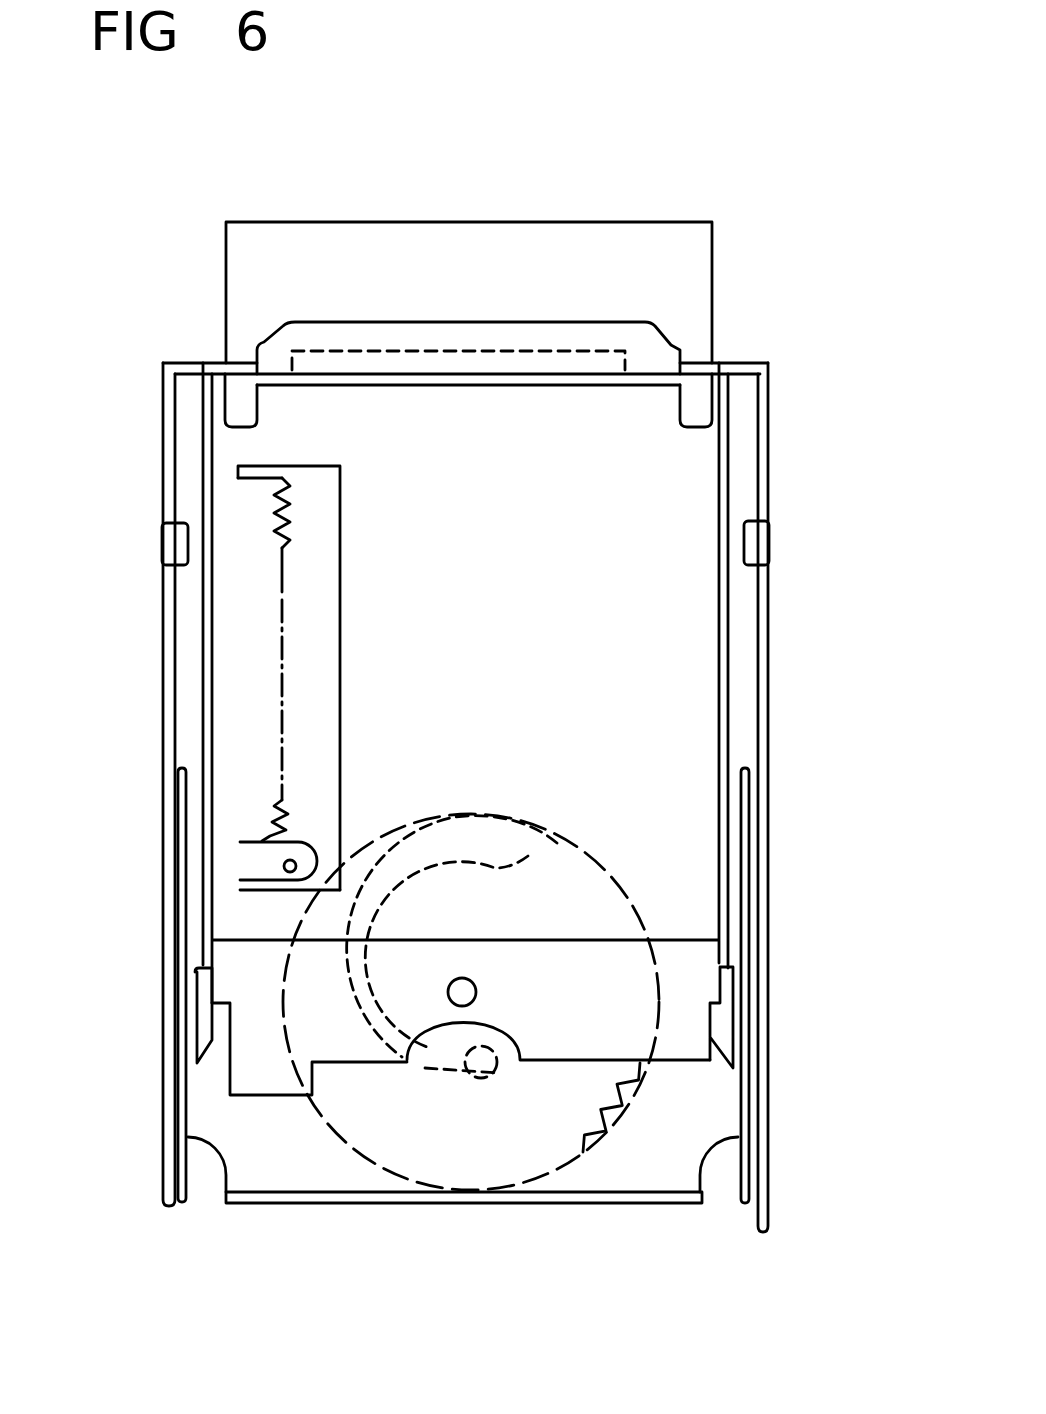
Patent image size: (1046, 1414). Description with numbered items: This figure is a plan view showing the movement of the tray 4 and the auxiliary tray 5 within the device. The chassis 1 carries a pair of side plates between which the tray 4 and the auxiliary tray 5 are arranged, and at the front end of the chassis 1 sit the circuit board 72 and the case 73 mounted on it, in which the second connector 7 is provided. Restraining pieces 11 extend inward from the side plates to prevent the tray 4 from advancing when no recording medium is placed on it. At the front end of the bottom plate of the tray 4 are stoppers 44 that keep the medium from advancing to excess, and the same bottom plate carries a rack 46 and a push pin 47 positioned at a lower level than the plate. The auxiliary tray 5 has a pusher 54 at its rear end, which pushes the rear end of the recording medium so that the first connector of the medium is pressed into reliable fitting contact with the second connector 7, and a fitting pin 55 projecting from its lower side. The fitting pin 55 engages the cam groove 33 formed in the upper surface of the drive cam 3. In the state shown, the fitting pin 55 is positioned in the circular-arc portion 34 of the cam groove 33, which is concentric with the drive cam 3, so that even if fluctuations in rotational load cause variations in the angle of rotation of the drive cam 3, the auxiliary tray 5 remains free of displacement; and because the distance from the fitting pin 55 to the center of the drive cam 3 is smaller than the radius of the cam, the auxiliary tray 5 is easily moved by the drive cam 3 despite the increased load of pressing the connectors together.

The chassis 1 is at (747, 483).
The drive cam 3 is at (590, 848).
The tray 4 is at (683, 661).
The auxiliary tray 5 is at (636, 1163).
The second connector 7 is at (380, 350).
The restraining pieces 11 is at (167, 552).
The cam groove 33 is at (478, 848).
The circular-arc portion 34 is at (435, 1065).
The stoppers 44 is at (723, 360).
The rack 46 is at (280, 517).
The push pin 47 is at (294, 862).
The pusher 54 is at (573, 1205).
The fitting pin 55 is at (458, 1072).
The circuit board 72 is at (593, 257).
The case 73 is at (622, 338).